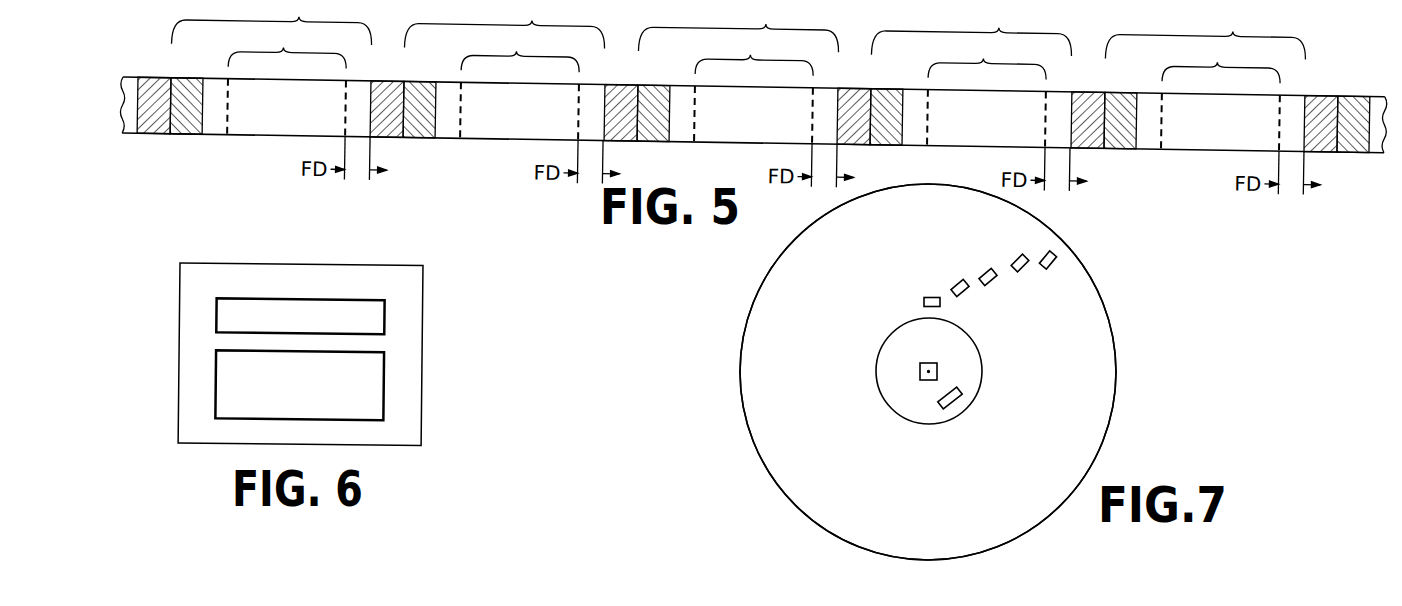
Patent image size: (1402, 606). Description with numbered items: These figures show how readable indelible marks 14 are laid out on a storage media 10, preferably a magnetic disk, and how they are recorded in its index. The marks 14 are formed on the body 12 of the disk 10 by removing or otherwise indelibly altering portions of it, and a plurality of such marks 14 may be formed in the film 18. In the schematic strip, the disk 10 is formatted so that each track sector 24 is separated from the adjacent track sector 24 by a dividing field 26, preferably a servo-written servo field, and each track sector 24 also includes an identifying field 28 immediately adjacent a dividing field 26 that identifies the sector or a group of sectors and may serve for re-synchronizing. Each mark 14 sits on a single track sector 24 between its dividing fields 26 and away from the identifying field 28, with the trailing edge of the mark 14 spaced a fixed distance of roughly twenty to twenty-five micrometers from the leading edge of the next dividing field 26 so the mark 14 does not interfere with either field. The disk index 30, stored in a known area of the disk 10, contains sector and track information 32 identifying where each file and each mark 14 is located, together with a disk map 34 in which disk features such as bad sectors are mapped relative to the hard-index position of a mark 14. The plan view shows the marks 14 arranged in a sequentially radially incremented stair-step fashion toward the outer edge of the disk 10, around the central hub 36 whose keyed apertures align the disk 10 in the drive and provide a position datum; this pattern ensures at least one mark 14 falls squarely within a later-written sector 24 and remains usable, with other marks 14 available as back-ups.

In FIG. 7, the storage media 10 is at (1134, 350).
In FIG. 7, the body 12 is at (1108, 296).
In FIG. 5, the readable indelible mark 14 is at (754, 87).
In FIG. 7, the readable indelible mark 14 is at (933, 297).
In FIG. 7, the film 18 is at (1007, 460).
In FIG. 5, the track sector 24 is at (739, 31).
In FIG. 5, the dividing field 26 is at (731, 93).
In FIG. 5, the identifying field 28 is at (777, 94).
In FIG. 6, the disk index 30 is at (419, 435).
In FIG. 6, the sector and track information 32 is at (378, 395).
In FIG. 6, the disk map 34 is at (384, 321).
In FIG. 7, the hub 36 is at (884, 388).